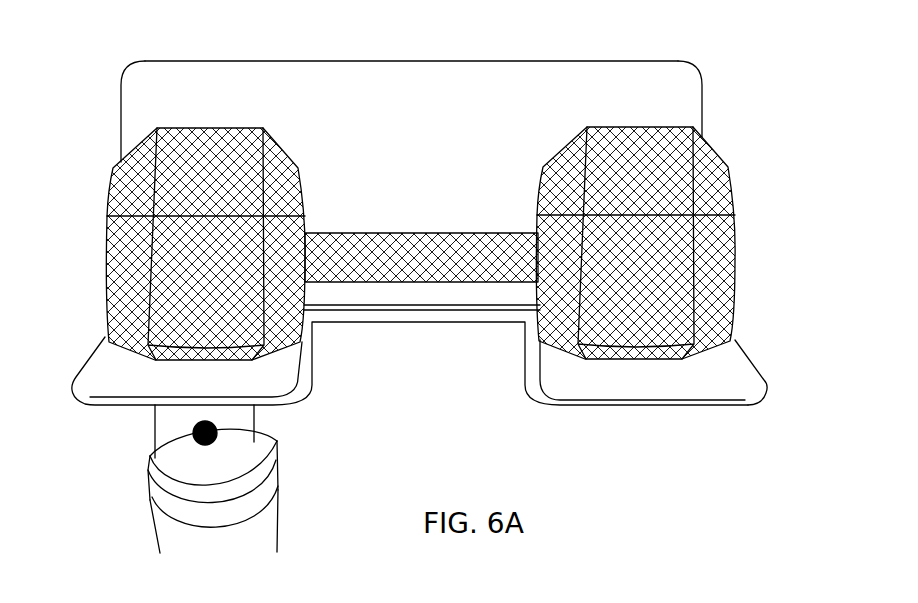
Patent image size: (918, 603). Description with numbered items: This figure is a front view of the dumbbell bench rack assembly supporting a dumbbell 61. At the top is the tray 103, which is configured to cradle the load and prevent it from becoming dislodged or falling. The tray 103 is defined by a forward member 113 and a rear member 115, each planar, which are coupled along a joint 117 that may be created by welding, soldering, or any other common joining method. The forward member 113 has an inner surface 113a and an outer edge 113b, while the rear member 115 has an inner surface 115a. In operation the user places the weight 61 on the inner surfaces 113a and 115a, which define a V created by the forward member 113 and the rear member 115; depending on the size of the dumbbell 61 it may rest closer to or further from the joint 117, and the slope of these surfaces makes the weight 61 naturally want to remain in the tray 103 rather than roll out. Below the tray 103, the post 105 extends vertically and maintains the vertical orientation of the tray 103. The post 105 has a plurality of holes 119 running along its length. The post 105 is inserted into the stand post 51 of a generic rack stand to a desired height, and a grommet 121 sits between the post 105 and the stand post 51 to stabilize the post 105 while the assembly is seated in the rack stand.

The tray 103 is at (647, 45).
The rear member 115 is at (290, 85).
The inner surface 115a is at (533, 83).
The dumbbell 61 is at (738, 229).
The joint 117 is at (400, 307).
The forward member 113 is at (93, 363).
The inner surface 113a is at (722, 381).
The outer edge 113b is at (700, 402).
The post 105 is at (155, 420).
The holes 119 is at (214, 422).
The grommet 121 is at (175, 498).
The stand post 51 is at (278, 540).